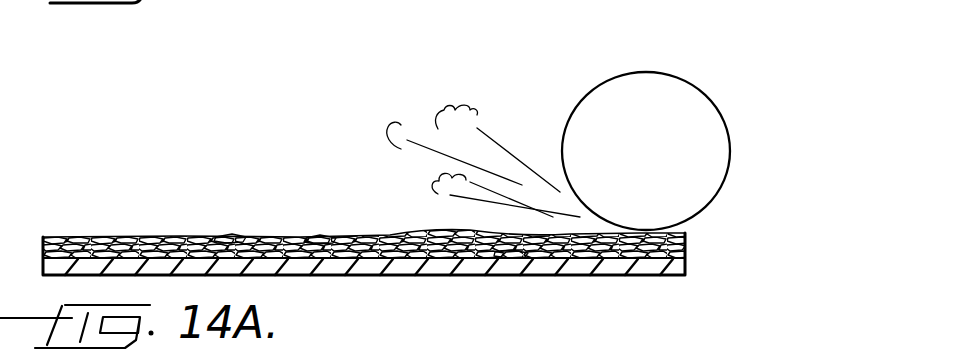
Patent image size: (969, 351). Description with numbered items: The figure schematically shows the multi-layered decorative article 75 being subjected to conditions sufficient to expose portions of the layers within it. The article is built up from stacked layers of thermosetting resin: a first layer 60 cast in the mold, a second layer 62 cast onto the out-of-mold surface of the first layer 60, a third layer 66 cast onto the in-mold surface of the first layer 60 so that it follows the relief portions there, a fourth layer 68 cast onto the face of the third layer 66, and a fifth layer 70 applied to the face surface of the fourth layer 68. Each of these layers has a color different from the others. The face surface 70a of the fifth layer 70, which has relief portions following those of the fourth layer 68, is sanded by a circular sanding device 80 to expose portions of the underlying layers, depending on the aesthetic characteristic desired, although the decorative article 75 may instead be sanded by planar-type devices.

The first layer 60 is at (457, 259).
The second layer 62 is at (384, 268).
The third layer 66 is at (603, 258).
The fourth layer 68 is at (513, 260).
The fifth layer 70 is at (232, 237).
The face surface 70a is at (322, 237).
The multi-layered decorative article 75 is at (738, 234).
The circular sanding device 80 is at (731, 58).